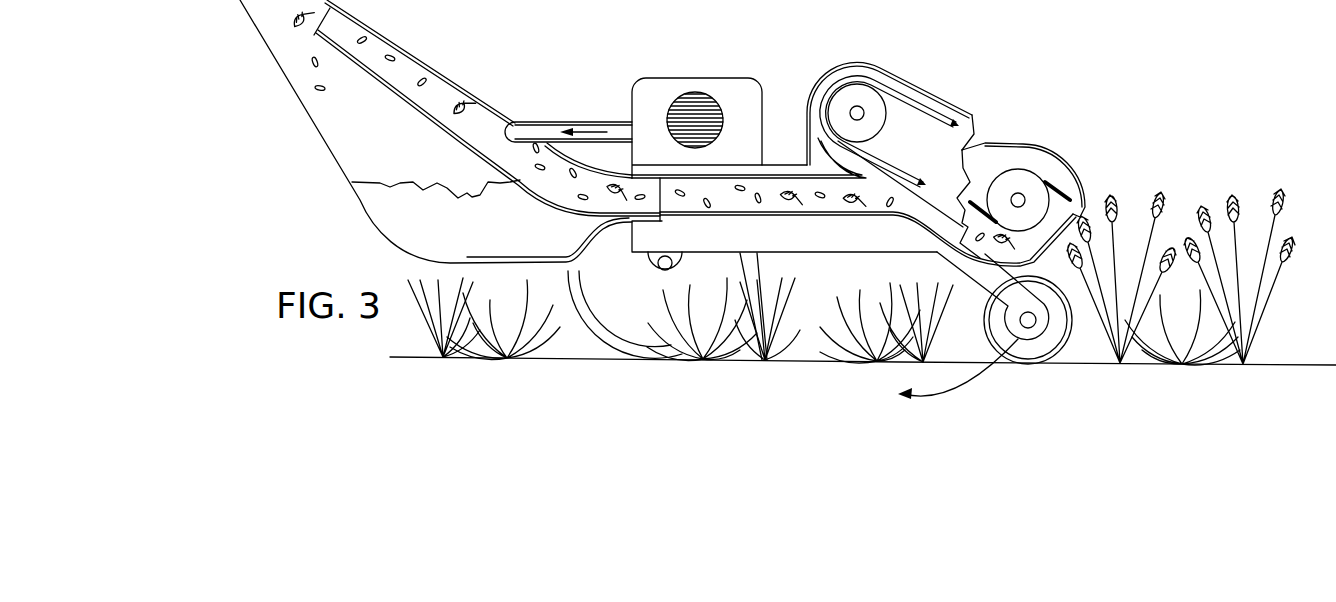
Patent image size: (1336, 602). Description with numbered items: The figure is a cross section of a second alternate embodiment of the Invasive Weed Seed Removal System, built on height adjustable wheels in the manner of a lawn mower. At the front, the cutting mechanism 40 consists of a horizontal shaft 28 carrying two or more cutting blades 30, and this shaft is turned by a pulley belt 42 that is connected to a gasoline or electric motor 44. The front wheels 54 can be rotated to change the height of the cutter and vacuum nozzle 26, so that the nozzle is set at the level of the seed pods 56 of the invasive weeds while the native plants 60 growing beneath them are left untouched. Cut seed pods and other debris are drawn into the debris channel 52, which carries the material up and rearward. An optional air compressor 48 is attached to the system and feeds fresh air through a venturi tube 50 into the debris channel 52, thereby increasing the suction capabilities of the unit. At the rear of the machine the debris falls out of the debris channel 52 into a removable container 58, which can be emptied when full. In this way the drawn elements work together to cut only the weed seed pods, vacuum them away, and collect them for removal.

The cutter and vacuum nozzle 26 is at (1054, 150).
The horizontal shaft 28 is at (1023, 194).
The cutting blades 30 is at (1078, 178).
The cutting mechanism 40 is at (1012, 186).
The pulley belt 42 is at (923, 110).
The gasoline or electric motor 44 is at (845, 62).
The air compressor 48 is at (650, 92).
The venturi tube 50 is at (520, 132).
The debris channel 52 is at (437, 87).
The front wheels 54 is at (1044, 338).
The seed pods 56 is at (1165, 208).
The removable container 58 is at (383, 160).
The native plants 60 is at (1197, 330).